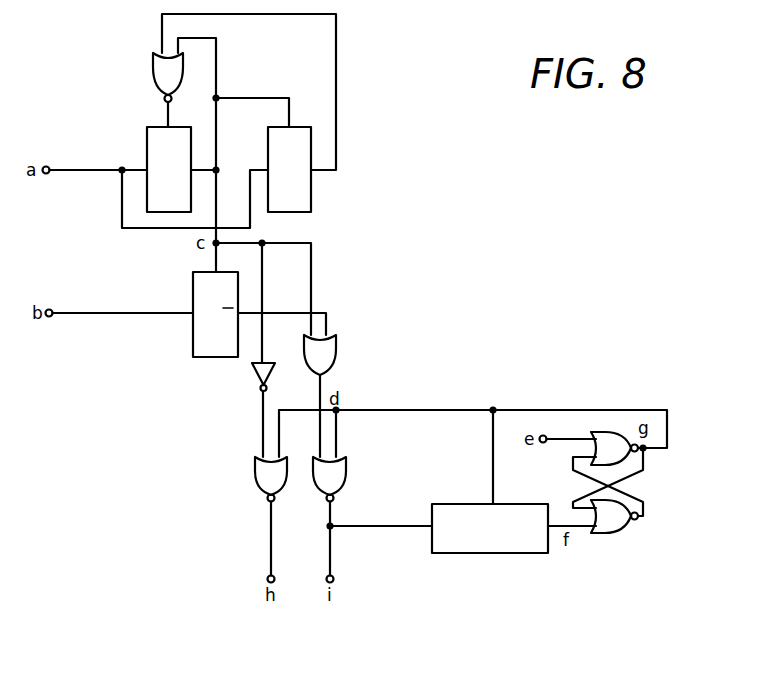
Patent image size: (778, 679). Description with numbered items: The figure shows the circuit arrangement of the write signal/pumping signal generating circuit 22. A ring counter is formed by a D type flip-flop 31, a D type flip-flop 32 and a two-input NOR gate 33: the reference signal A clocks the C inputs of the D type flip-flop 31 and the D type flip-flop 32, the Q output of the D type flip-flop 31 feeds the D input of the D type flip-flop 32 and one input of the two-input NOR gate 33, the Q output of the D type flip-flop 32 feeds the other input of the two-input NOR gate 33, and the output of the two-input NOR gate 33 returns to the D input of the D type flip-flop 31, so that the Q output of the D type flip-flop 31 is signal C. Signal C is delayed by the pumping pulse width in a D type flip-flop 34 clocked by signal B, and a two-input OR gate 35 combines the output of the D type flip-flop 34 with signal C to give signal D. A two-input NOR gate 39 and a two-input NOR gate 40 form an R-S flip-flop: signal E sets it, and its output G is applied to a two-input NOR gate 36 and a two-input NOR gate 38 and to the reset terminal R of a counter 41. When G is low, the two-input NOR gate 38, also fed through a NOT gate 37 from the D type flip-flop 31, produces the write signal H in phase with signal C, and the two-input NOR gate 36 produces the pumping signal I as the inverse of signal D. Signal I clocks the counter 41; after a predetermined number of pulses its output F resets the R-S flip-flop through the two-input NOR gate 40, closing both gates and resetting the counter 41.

The write signal/pumping signal generating circuit 22 is at (408, 199).
The D type flip-flop 31 is at (147, 146).
The D type flip-flop 32 is at (311, 204).
The two-input NOR gate 33 is at (153, 76).
The D type flip-flop 34 is at (203, 357).
The two-input OR gate 35 is at (336, 350).
The two-input NOR gate 36 is at (346, 470).
The NOT gate 37 is at (250, 384).
The two-input NOR gate 38 is at (255, 475).
The two-input NOR gate 39 is at (647, 398).
The two-input NOR gate 40 is at (602, 533).
The counter 41 is at (463, 553).